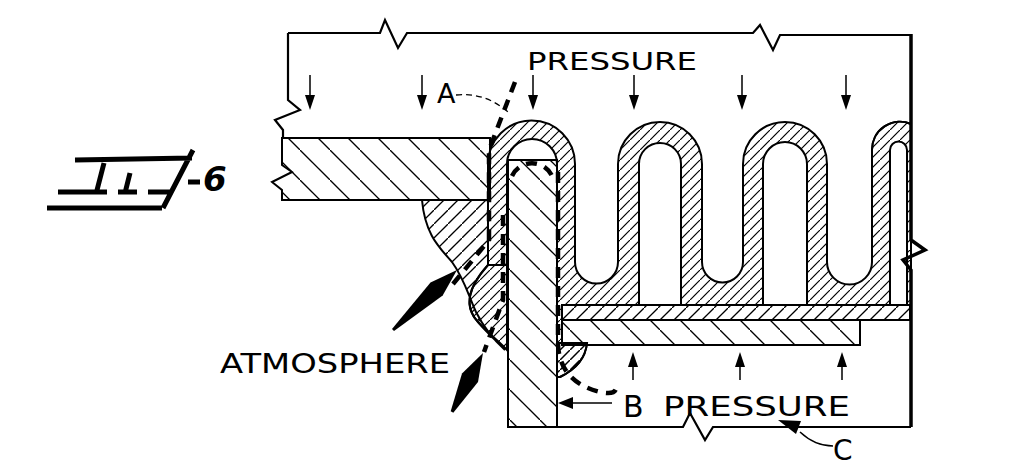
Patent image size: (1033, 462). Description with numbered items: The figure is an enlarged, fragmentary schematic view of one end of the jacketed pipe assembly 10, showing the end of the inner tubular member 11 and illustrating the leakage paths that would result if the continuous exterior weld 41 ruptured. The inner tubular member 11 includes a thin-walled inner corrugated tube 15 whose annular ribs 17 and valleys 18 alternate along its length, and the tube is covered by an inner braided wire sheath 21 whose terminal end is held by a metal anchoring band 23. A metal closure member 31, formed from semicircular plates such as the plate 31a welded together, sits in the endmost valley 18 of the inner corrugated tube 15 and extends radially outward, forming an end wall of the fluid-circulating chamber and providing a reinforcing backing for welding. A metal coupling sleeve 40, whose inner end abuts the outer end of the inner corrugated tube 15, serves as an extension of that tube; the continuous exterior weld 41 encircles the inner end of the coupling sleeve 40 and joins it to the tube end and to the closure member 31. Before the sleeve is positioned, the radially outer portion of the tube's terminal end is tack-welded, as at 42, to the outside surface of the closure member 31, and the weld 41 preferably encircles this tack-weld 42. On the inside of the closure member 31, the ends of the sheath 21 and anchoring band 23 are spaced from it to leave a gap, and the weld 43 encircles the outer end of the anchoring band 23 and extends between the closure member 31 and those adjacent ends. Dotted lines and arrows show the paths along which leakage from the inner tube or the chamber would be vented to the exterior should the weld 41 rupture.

The jacketed pipe assembly 10 is at (258, 45).
The inner tubular member 11 is at (801, 102).
The inner corrugated tube 15 is at (883, 134).
The annular ribs 17 is at (648, 313).
The valleys 18 is at (785, 290).
The inner braided wire sheath 21 is at (674, 305).
The metal anchoring band 23 is at (855, 345).
The metal closure member 31 is at (537, 412).
The semicircular plate 31a is at (512, 410).
The metal coupling sleeve 40 is at (303, 199).
The continuous exterior weld 41 is at (431, 240).
The tack-weld 42 is at (487, 317).
The weld 43 is at (574, 362).